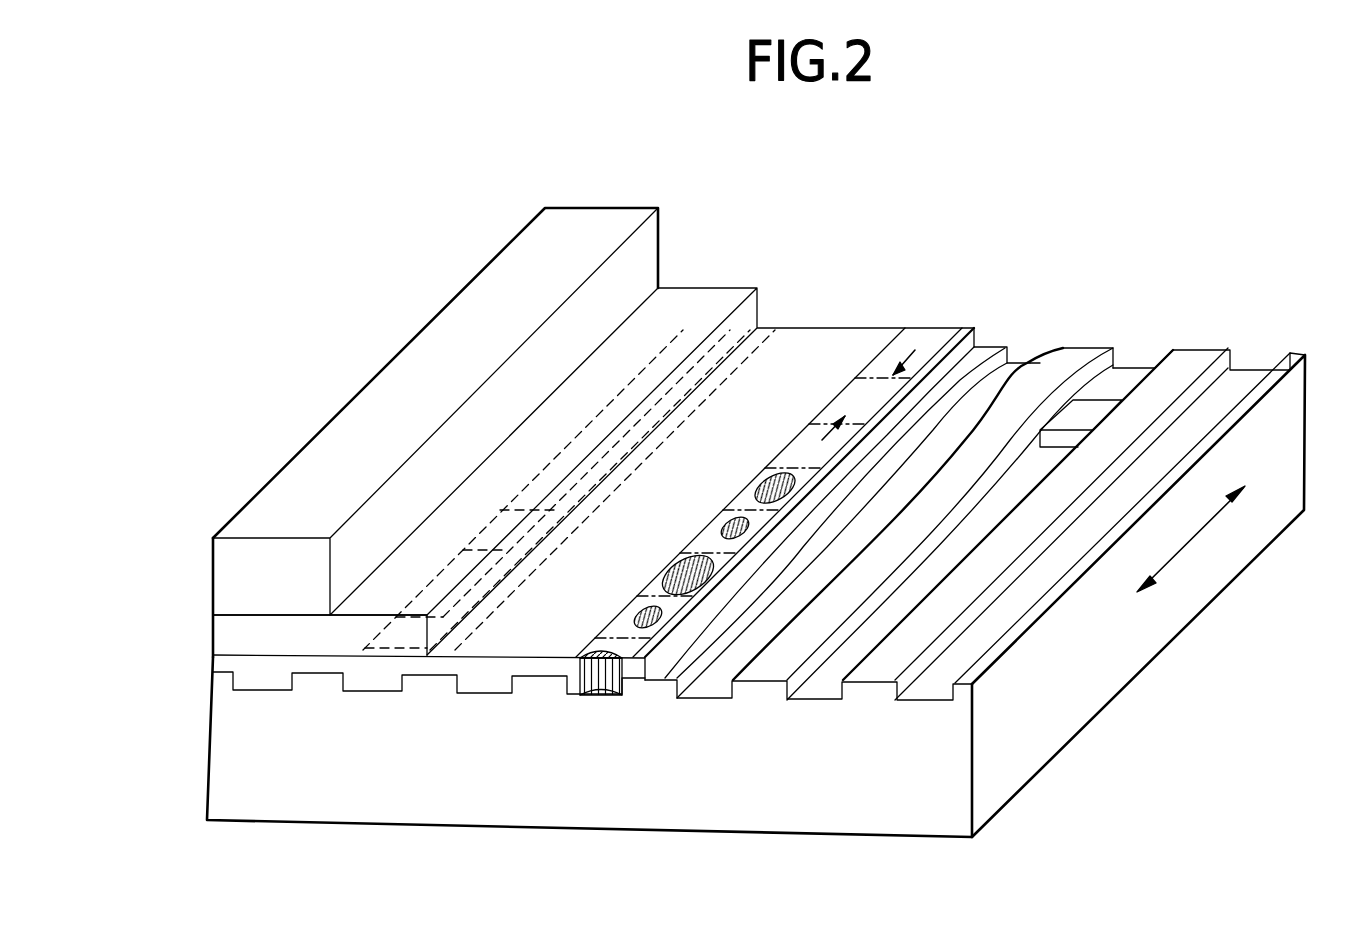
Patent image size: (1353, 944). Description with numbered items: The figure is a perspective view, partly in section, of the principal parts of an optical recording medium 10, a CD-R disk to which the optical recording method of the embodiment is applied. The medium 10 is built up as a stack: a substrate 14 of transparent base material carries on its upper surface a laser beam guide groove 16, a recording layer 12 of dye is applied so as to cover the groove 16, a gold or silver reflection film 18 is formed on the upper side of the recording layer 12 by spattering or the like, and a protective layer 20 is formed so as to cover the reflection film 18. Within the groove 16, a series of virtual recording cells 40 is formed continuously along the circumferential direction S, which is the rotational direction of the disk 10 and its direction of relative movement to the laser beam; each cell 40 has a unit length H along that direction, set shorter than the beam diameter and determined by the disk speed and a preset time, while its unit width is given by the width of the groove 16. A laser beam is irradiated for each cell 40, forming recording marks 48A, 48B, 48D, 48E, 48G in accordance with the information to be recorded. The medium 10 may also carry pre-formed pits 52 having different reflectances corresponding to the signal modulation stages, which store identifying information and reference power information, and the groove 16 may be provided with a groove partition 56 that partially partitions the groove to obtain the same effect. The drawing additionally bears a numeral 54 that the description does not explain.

The optical recording medium 10 is at (372, 192).
The recording layer 12 is at (481, 686).
The substrate 14 is at (1118, 680).
The laser beam guide groove 16 is at (1013, 362).
The reflection film 18 is at (757, 300).
The protective layer 20 is at (657, 245).
The virtual recording cell 40 is at (935, 330).
The recording mark 48A is at (638, 612).
The recording mark 48B is at (725, 521).
The recording mark 48D is at (770, 481).
The recording mark 48E is at (592, 655).
The recording mark 48G is at (668, 568).
The pits 52 is at (420, 600).
The buried waveguide 54 is at (613, 397).
The groove partition 56 is at (1097, 408).
The unit length H is at (852, 400).
The circumferential direction S is at (1191, 539).